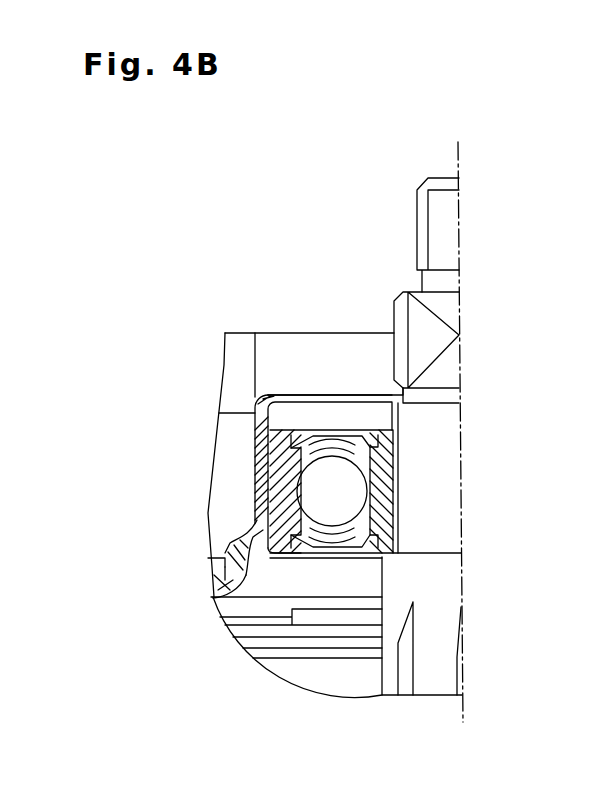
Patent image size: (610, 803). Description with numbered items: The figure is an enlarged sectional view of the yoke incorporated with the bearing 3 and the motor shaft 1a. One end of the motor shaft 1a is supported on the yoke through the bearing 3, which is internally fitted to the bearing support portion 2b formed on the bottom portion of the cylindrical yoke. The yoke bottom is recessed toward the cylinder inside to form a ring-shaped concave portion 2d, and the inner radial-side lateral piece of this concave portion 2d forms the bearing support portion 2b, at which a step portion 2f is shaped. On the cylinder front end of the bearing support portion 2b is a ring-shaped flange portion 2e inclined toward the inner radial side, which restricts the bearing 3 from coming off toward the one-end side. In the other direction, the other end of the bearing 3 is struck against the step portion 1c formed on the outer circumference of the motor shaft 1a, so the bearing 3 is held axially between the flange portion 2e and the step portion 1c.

The motor shaft 1a is at (447, 222).
The step portion 1c is at (380, 553).
The bearing support portion 2b is at (255, 452).
The flange portion 2e is at (265, 398).
The step portion 2f is at (233, 537).
The concave portion 2d is at (205, 562).
The bearing 3 is at (378, 430).